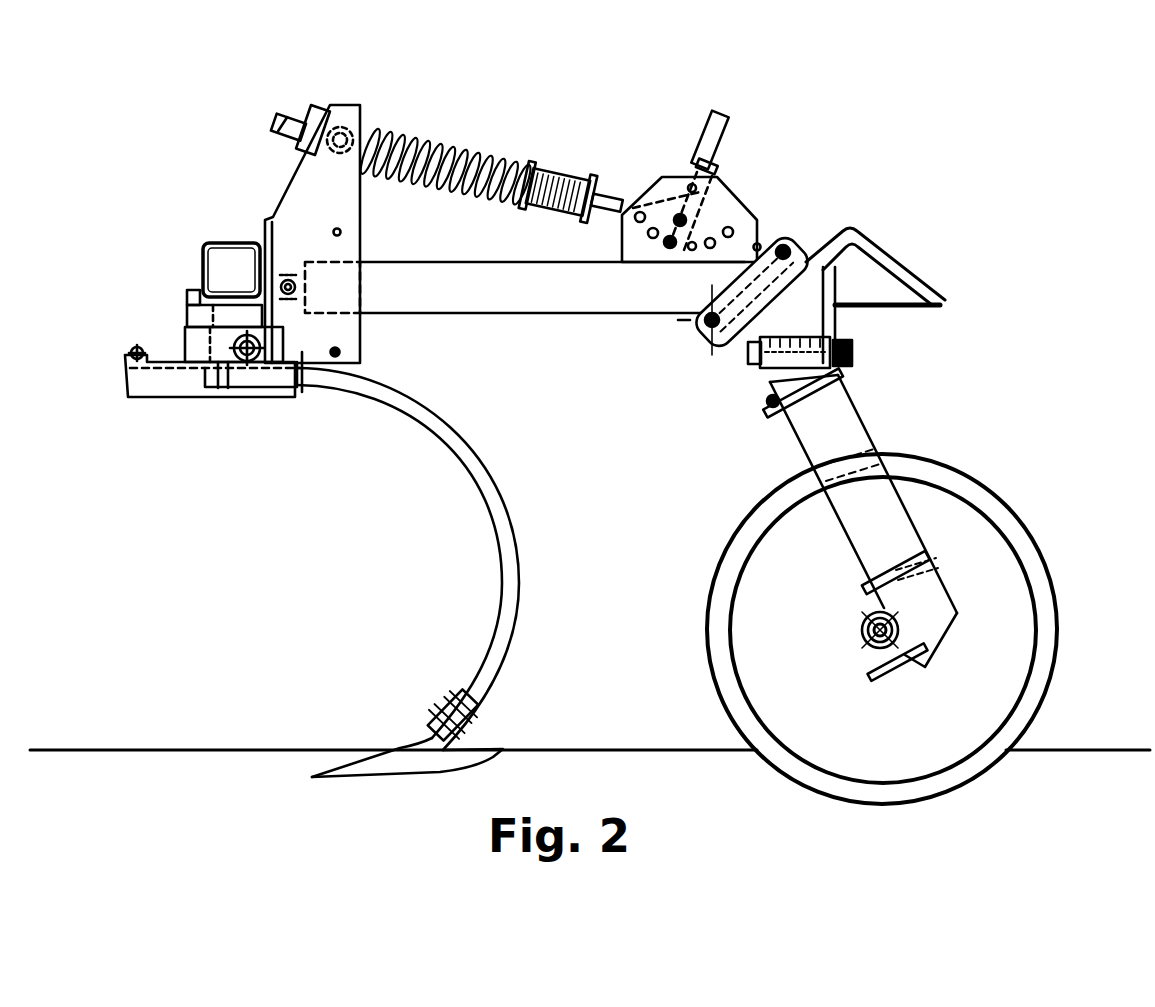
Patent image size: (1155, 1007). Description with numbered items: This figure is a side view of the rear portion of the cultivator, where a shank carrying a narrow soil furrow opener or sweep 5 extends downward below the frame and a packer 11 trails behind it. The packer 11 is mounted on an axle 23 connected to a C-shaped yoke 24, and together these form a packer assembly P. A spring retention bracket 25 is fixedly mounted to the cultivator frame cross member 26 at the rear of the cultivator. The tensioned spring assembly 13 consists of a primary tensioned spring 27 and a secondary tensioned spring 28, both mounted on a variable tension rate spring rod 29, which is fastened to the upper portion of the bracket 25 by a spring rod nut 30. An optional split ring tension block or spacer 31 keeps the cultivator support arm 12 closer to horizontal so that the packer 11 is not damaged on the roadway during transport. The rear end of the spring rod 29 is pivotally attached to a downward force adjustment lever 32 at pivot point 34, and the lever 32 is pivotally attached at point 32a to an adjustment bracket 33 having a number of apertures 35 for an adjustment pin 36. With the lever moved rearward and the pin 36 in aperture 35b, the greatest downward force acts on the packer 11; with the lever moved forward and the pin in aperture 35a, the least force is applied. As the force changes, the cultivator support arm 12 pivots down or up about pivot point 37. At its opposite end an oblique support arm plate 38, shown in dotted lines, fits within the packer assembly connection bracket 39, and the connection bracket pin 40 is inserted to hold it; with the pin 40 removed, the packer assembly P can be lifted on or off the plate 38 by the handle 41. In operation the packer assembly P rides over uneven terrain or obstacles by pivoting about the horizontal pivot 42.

The sweep 5 is at (490, 562).
The packer 11 is at (1020, 578).
The cultivator support arm 12 is at (465, 316).
The tensioned spring assembly 13 is at (523, 118).
The axle 23 is at (868, 643).
The C-shaped yoke 24 is at (890, 520).
The spring retention bracket 25 is at (362, 232).
The cultivator frame cross member 26 is at (203, 262).
The primary tensioned spring 27 is at (450, 142).
The secondary tensioned spring 28 is at (560, 170).
The variable tension rate spring rod 29 is at (616, 208).
The spring rod nut 30 is at (297, 117).
The split ring tension block 31 is at (322, 110).
The downward force adjustment lever 32 is at (730, 118).
The pivot point 32a is at (710, 178).
The adjustment bracket 33 is at (700, 188).
The pivot point 34 is at (732, 228).
The apertures 35 is at (692, 251).
The aperture 35a is at (762, 245).
The aperture 35b is at (635, 221).
The adjustment pin 36 is at (653, 238).
The pivot point 37 is at (298, 296).
The oblique support arm plate 38 is at (795, 300).
The packer assembly connection bracket 39 is at (800, 242).
The connection bracket pin 40 is at (710, 327).
The handle 41 is at (912, 268).
The horizontal pivot 42 is at (855, 355).
The packer assembly P is at (978, 398).